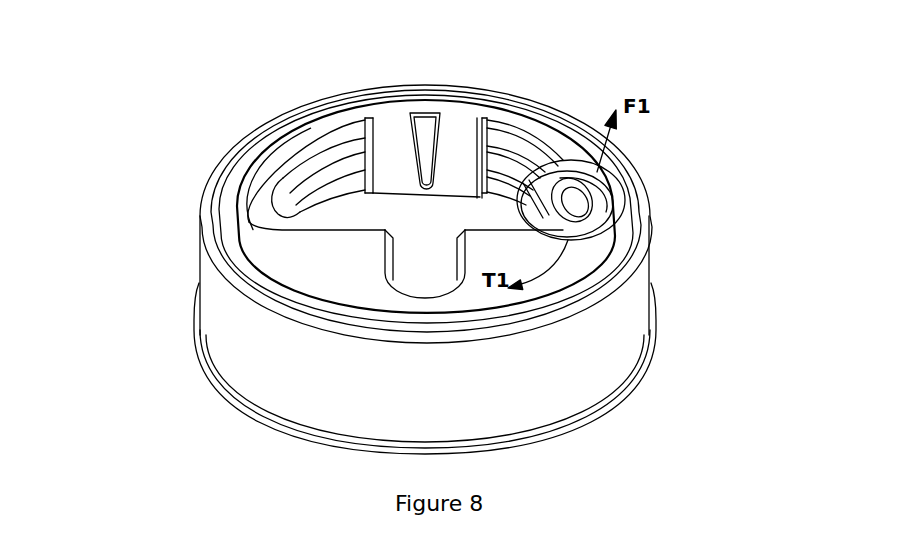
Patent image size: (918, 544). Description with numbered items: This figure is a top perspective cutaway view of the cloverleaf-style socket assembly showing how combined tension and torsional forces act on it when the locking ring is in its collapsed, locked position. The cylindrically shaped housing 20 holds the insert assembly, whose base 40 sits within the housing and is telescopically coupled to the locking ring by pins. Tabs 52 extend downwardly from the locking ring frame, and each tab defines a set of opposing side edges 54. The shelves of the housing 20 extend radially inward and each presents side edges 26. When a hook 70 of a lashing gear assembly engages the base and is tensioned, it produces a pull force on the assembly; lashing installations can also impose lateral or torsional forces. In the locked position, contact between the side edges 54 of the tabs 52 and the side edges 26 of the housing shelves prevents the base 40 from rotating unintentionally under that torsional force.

The housing 20 is at (587, 362).
The base 40 is at (307, 262).
The side edges 26 is at (366, 150).
The tabs 52 is at (453, 143).
The side edges 54 is at (367, 142).
The hook 70 is at (623, 170).